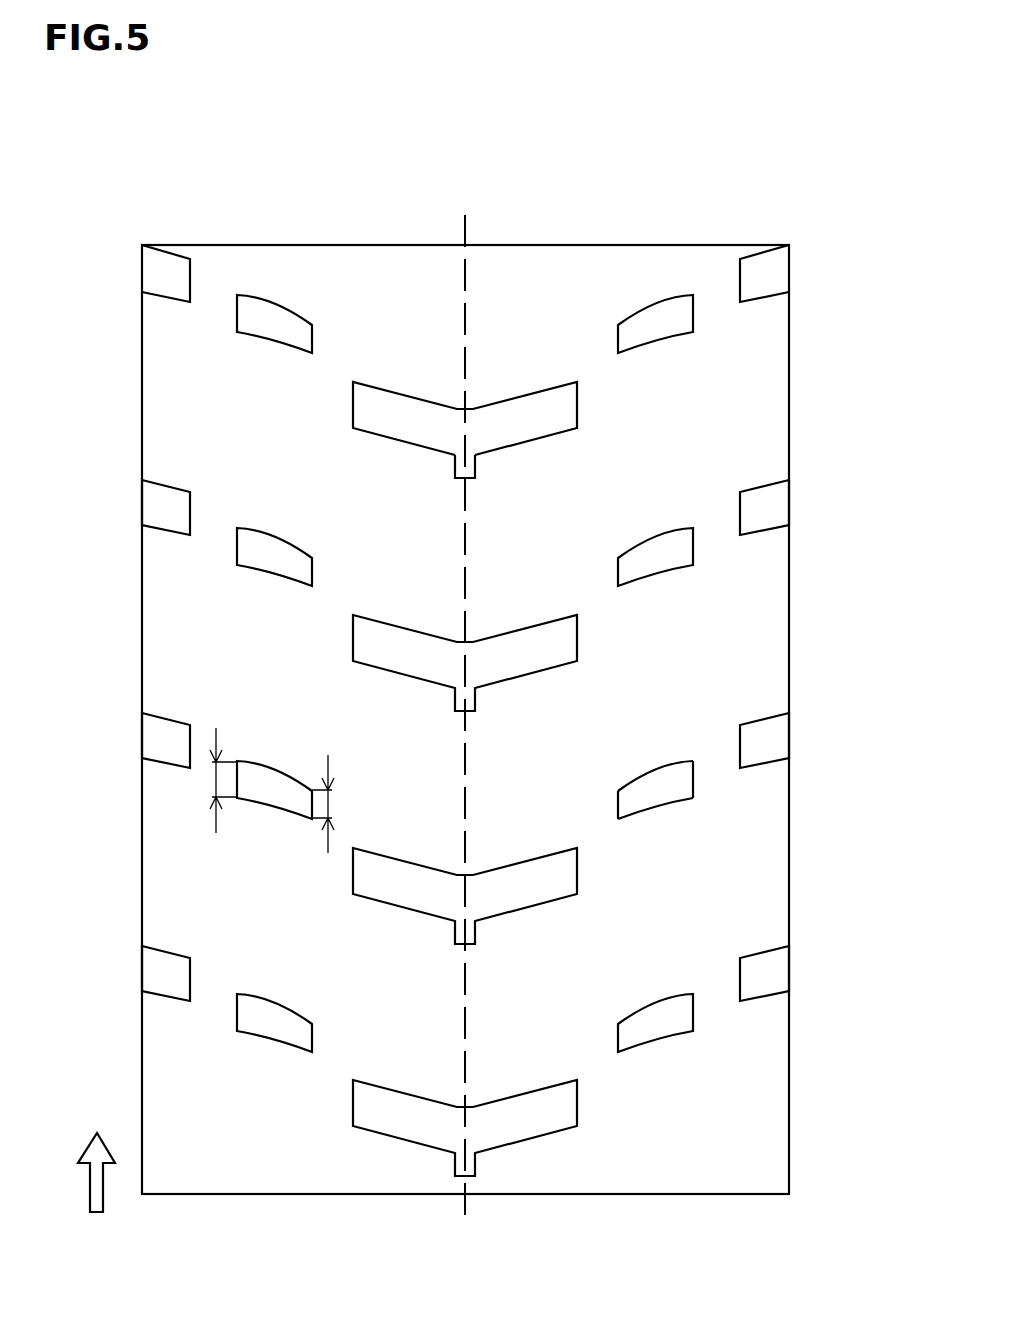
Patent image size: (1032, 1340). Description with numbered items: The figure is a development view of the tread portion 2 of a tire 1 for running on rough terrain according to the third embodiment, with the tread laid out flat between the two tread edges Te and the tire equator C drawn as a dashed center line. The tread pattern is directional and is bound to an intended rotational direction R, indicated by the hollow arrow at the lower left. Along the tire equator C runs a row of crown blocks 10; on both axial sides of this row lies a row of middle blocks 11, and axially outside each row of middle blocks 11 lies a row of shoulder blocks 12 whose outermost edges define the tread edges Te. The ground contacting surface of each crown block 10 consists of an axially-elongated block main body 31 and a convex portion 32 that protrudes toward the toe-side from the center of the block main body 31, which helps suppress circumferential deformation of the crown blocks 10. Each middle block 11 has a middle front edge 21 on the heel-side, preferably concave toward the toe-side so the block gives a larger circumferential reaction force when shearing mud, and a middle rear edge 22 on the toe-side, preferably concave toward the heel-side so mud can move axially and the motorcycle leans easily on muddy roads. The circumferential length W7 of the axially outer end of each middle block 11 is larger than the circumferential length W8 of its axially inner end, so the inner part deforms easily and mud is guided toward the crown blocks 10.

The tire 1 is at (572, 244).
The tread portion 2 is at (502, 298).
The crown block 10 is at (633, 769).
The middle block 11 is at (469, 694).
The shoulder block 12 is at (167, 510).
The middle front edge 21 is at (656, 777).
The middle rear edge 22 is at (658, 806).
The block main body 31 is at (538, 414).
The convex portion 32 is at (478, 466).
The tire equator C is at (465, 704).
The tread edge Te is at (142, 266).
The rotational direction R is at (96, 1155).
The length W7 is at (214, 783).
The length W8 is at (347, 804).